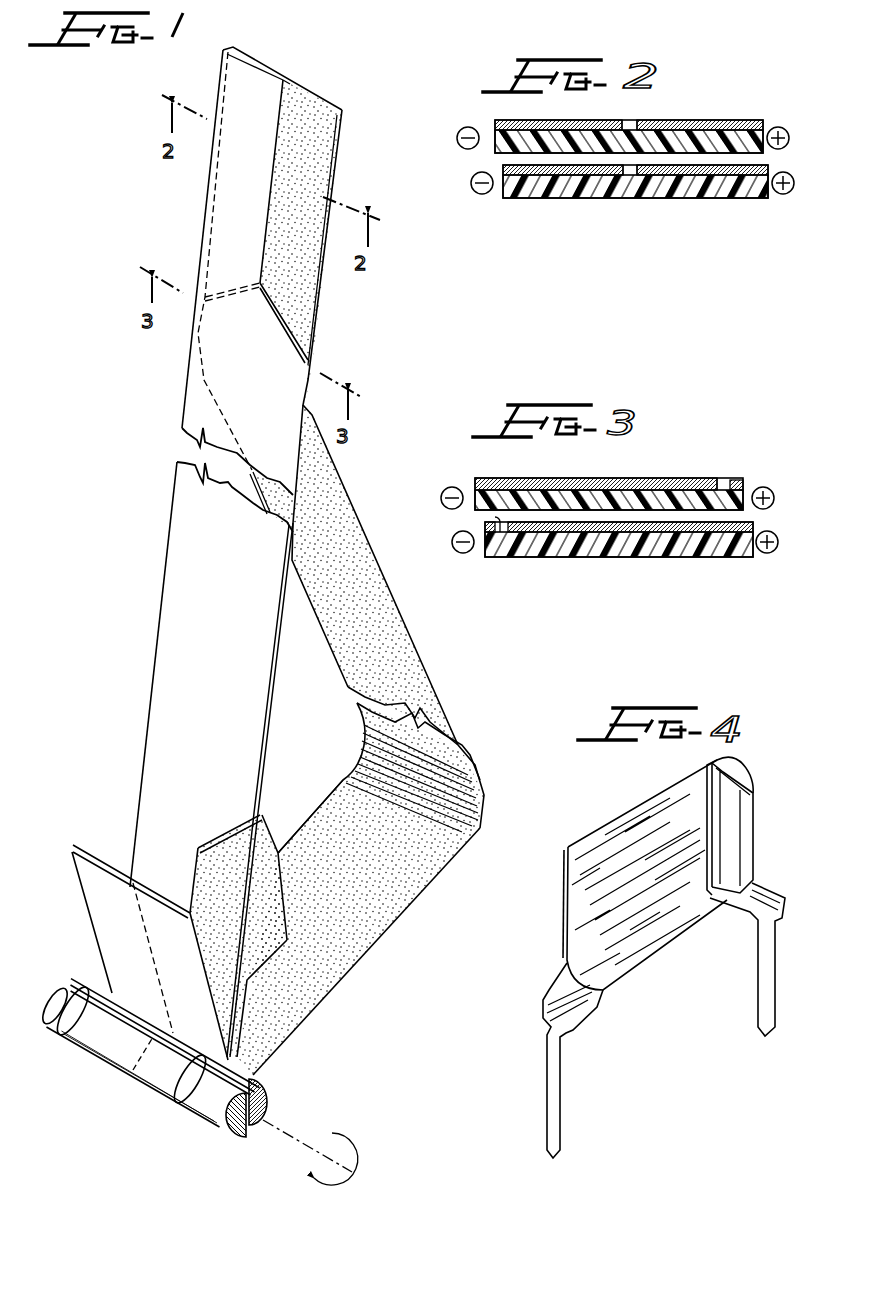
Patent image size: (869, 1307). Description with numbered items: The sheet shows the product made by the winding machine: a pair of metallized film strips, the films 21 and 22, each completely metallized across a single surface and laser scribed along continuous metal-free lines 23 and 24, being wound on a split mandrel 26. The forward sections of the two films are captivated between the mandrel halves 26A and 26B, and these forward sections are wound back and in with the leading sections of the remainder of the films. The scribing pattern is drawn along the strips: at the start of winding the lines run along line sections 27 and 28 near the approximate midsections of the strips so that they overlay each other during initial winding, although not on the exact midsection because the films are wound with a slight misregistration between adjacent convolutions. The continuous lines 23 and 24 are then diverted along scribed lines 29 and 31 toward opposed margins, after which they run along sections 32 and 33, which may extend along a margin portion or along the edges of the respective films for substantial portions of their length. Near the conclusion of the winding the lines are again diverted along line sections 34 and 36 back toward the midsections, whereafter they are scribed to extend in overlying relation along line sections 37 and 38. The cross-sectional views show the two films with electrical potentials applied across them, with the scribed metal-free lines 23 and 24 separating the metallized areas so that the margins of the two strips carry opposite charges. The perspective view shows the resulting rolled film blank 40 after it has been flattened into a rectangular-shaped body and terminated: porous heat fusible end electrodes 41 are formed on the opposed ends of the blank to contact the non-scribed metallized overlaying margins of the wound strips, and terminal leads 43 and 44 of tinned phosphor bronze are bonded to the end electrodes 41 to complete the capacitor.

In FIG. 1, the film 21 is at (155, 640).
In FIG. 2, the film 21 is at (713, 118).
In FIG. 3, the film 21 is at (560, 478).
In FIG. 1, the film 22 is at (410, 636).
In FIG. 2, the film 22 is at (703, 200).
In FIG. 3, the film 22 is at (658, 558).
In FIG. 1, the continuous metal-free line 23 is at (217, 832).
In FIG. 2, the continuous metal-free line 23 is at (622, 122).
In FIG. 3, the continuous metal-free line 23 is at (715, 480).
In FIG. 1, the continuous metal-free line 24 is at (282, 953).
In FIG. 2, the continuous metal-free line 24 is at (630, 170).
In FIG. 3, the continuous metal-free line 24 is at (503, 533).
In FIG. 1, the split mandrel 26 is at (266, 1081).
In FIG. 1, the mandrel half 26A is at (265, 1106).
In FIG. 1, the mandrel half 26B is at (238, 1138).
In FIG. 1, the line section 27 is at (193, 892).
In FIG. 1, the line section 28 is at (260, 964).
In FIG. 1, the scribed line 29 is at (215, 841).
In FIG. 1, the scribed line 31 is at (277, 878).
In FIG. 1, the margin line section 32 is at (280, 673).
In FIG. 3, the margin line section 32 is at (727, 487).
In FIG. 1, the margin line section 33 is at (357, 770).
In FIG. 3, the margin line section 33 is at (493, 519).
In FIG. 1, the line section 34 is at (290, 327).
In FIG. 1, the line section 36 is at (230, 287).
In FIG. 1, the line section 37 is at (272, 185).
In FIG. 2, the line section 37 is at (632, 127).
In FIG. 1, the line section 38 is at (289, 82).
In FIG. 2, the line section 38 is at (650, 170).
In FIG. 4, the rolled film blank 40 is at (633, 810).
In FIG. 4, the end electrodes 41 is at (740, 787).
In FIG. 4, the terminal lead 43 is at (560, 1060).
In FIG. 4, the terminal lead 44 is at (757, 963).